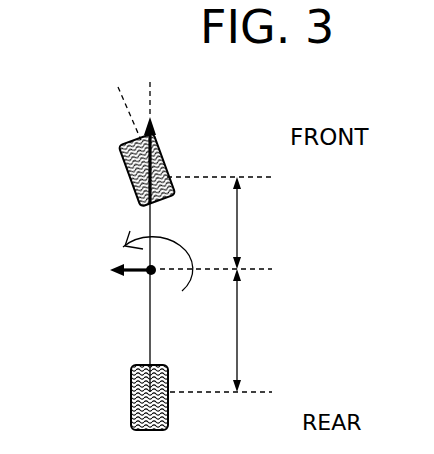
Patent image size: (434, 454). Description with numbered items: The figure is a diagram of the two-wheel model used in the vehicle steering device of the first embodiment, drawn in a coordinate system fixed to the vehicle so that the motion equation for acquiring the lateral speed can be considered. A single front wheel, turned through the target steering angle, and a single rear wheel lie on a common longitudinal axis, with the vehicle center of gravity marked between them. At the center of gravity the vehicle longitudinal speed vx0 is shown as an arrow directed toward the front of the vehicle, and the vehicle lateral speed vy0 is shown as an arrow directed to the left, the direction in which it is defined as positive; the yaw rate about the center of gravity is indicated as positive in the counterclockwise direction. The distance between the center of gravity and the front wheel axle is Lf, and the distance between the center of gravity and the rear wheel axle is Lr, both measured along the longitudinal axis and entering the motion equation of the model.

The vehicle longitudinal speed vx0 is at (178, 155).
The vehicle lateral speed vy0 is at (106, 283).
The distance between center of gravity and front wheel axle Lf is at (254, 223).
The distance between center of gravity and rear wheel axle Lr is at (254, 330).